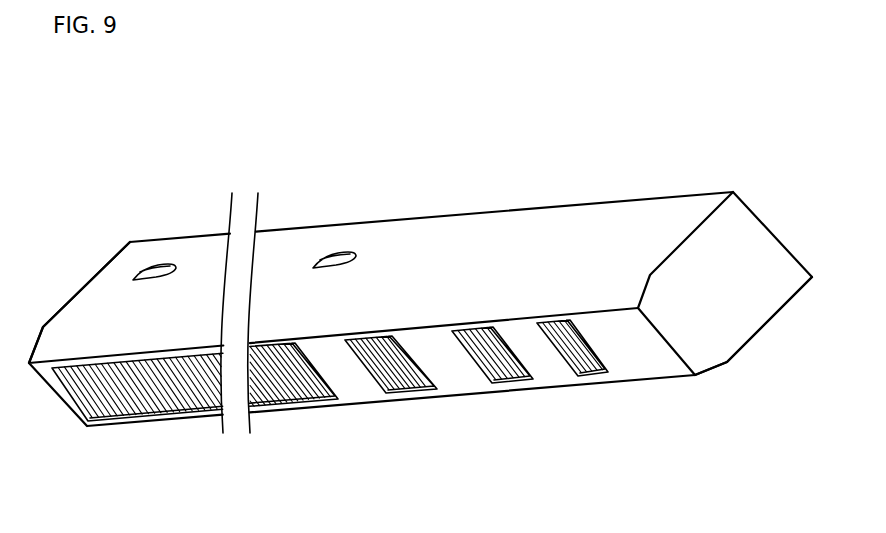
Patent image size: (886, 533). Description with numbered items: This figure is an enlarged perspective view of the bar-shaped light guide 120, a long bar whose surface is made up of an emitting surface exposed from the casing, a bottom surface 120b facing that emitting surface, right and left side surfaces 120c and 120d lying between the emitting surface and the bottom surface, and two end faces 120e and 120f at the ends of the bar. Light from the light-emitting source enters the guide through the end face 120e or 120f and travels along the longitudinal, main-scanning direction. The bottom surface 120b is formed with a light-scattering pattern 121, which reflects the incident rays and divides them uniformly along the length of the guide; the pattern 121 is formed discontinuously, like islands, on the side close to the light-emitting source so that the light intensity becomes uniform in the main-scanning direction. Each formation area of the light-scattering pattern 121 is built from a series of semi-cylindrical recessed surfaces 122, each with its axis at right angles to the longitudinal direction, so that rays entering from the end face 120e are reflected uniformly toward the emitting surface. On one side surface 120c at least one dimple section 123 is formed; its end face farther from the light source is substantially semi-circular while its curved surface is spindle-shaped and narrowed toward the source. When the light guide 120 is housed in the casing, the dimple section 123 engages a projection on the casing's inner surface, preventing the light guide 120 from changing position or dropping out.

The bar-shaped light guide 120 is at (643, 167).
The bottom surface 120b is at (543, 360).
The side surface 120c is at (512, 233).
The side surface 120d is at (752, 340).
The end face 120e is at (740, 262).
The end face 120f is at (83, 286).
The light-scattering pattern 121 is at (145, 402).
The semi-cylindrical recessed surface 122 is at (503, 372).
The dimple section 123 is at (152, 270).